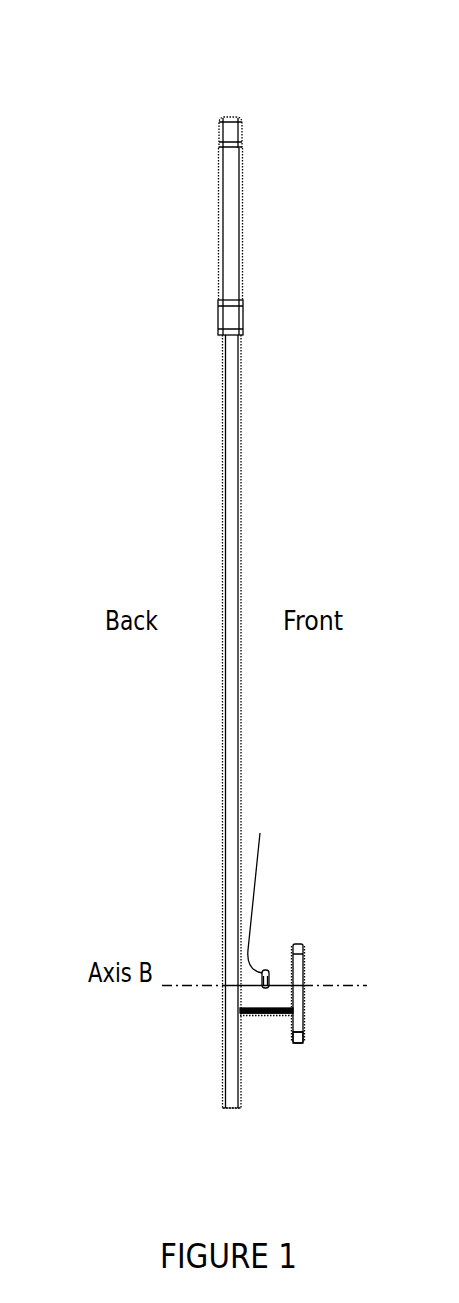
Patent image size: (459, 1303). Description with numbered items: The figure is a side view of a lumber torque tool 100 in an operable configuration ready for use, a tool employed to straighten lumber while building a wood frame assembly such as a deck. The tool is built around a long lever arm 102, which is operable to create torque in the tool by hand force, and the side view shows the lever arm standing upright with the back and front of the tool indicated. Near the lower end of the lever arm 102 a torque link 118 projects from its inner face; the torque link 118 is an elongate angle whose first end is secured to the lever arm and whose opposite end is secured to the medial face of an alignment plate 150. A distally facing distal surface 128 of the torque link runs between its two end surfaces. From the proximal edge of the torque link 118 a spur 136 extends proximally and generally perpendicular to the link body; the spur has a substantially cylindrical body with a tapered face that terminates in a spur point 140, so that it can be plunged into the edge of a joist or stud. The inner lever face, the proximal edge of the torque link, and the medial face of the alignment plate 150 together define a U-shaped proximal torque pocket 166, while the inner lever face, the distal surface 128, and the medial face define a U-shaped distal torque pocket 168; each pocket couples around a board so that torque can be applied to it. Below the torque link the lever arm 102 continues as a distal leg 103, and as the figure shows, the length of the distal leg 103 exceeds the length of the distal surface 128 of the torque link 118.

The lumber torque tool 100 is at (130, 82).
The lever arm 102 is at (271, 532).
The distal leg 103 is at (210, 1010).
The torque link 118 is at (262, 1015).
The distal surface 128 is at (277, 1022).
The spur 136 is at (264, 965).
The spur point 140 is at (273, 887).
The alignment plate 150 is at (312, 1030).
The proximal torque pocket 166 is at (279, 938).
The distal torque pocket 168 is at (258, 1060).